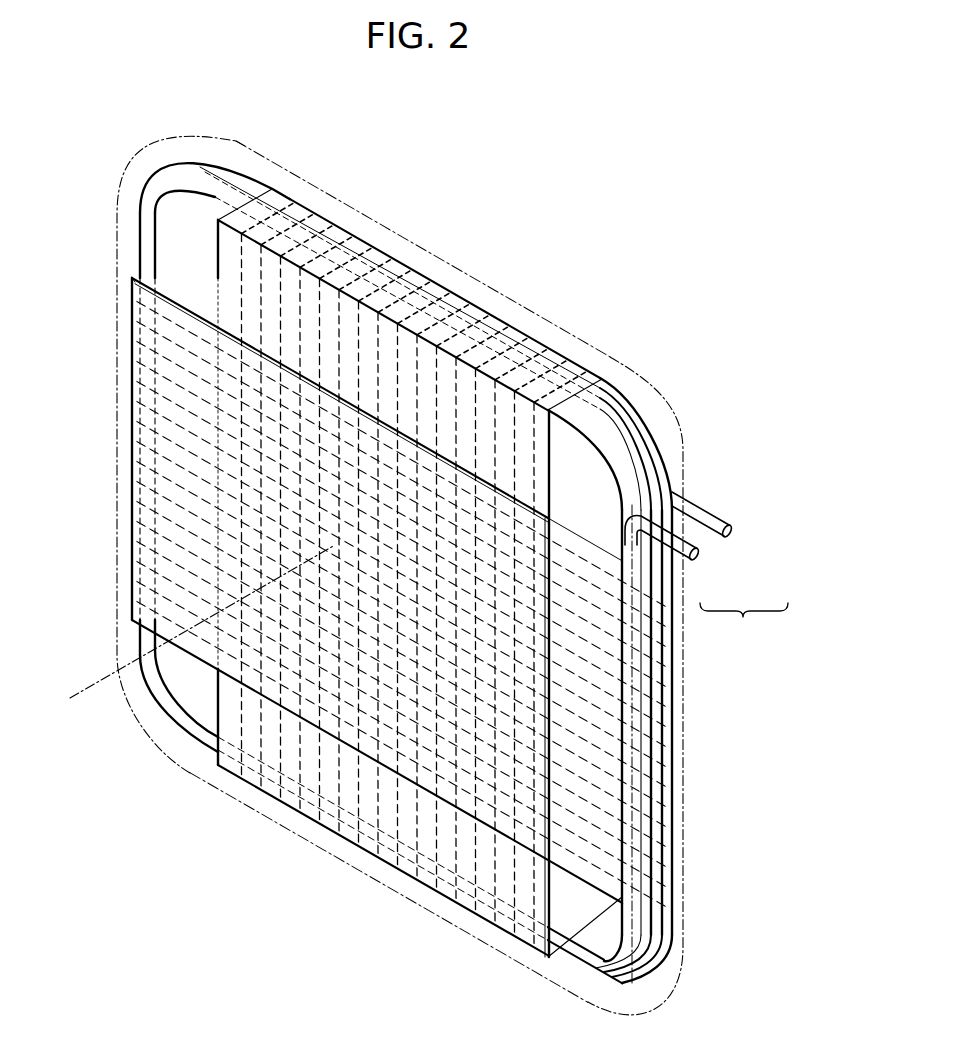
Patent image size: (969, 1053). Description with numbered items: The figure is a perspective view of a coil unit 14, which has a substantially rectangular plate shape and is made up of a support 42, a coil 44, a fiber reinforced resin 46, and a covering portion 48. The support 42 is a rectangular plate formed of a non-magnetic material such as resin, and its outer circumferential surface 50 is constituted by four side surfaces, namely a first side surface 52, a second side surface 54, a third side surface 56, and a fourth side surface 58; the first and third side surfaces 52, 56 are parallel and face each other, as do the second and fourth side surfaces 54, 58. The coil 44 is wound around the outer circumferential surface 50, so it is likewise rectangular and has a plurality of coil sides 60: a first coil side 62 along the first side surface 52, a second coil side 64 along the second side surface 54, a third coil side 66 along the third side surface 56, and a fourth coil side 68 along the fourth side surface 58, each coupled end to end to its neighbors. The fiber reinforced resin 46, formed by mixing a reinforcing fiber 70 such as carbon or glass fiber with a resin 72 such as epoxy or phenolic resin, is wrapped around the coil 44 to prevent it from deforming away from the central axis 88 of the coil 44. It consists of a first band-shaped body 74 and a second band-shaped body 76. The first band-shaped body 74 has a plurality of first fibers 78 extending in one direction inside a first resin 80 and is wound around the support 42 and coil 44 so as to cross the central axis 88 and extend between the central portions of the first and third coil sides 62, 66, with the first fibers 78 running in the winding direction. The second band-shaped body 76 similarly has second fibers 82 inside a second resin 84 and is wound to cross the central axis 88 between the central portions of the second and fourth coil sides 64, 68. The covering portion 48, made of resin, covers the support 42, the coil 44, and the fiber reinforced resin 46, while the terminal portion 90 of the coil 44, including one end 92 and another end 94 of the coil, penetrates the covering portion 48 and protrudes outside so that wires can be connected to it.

The coil unit 14 is at (592, 344).
The support 42 is at (178, 247).
The coil 44 is at (150, 179).
The fiber reinforced resin 46 is at (299, 199).
The covering portion 48 is at (231, 137).
The outer circumferential surface 50 is at (147, 258).
The first side surface 52 is at (170, 225).
The second side surface 54 is at (195, 208).
The third side surface 56 is at (622, 913).
The fourth side surface 58 is at (565, 942).
The coil sides 60 is at (425, 609).
The first coil side 62 is at (147, 627).
The second coil side 64 is at (598, 390).
The third coil side 66 is at (667, 880).
The fourth coil side 68 is at (217, 742).
The reinforcing fiber 70 is at (345, 600).
The resin 72 is at (304, 563).
The first band-shaped body 74 is at (124, 493).
The second band-shaped body 76 is at (506, 322).
The first fiber 78 is at (140, 424).
The first resin 80 is at (137, 561).
The second fiber 82 is at (457, 297).
The second resin 84 is at (314, 226).
The central axis 88 is at (189, 631).
The terminal portion 90 is at (744, 624).
The one end 92 is at (698, 556).
The another end 94 is at (732, 534).